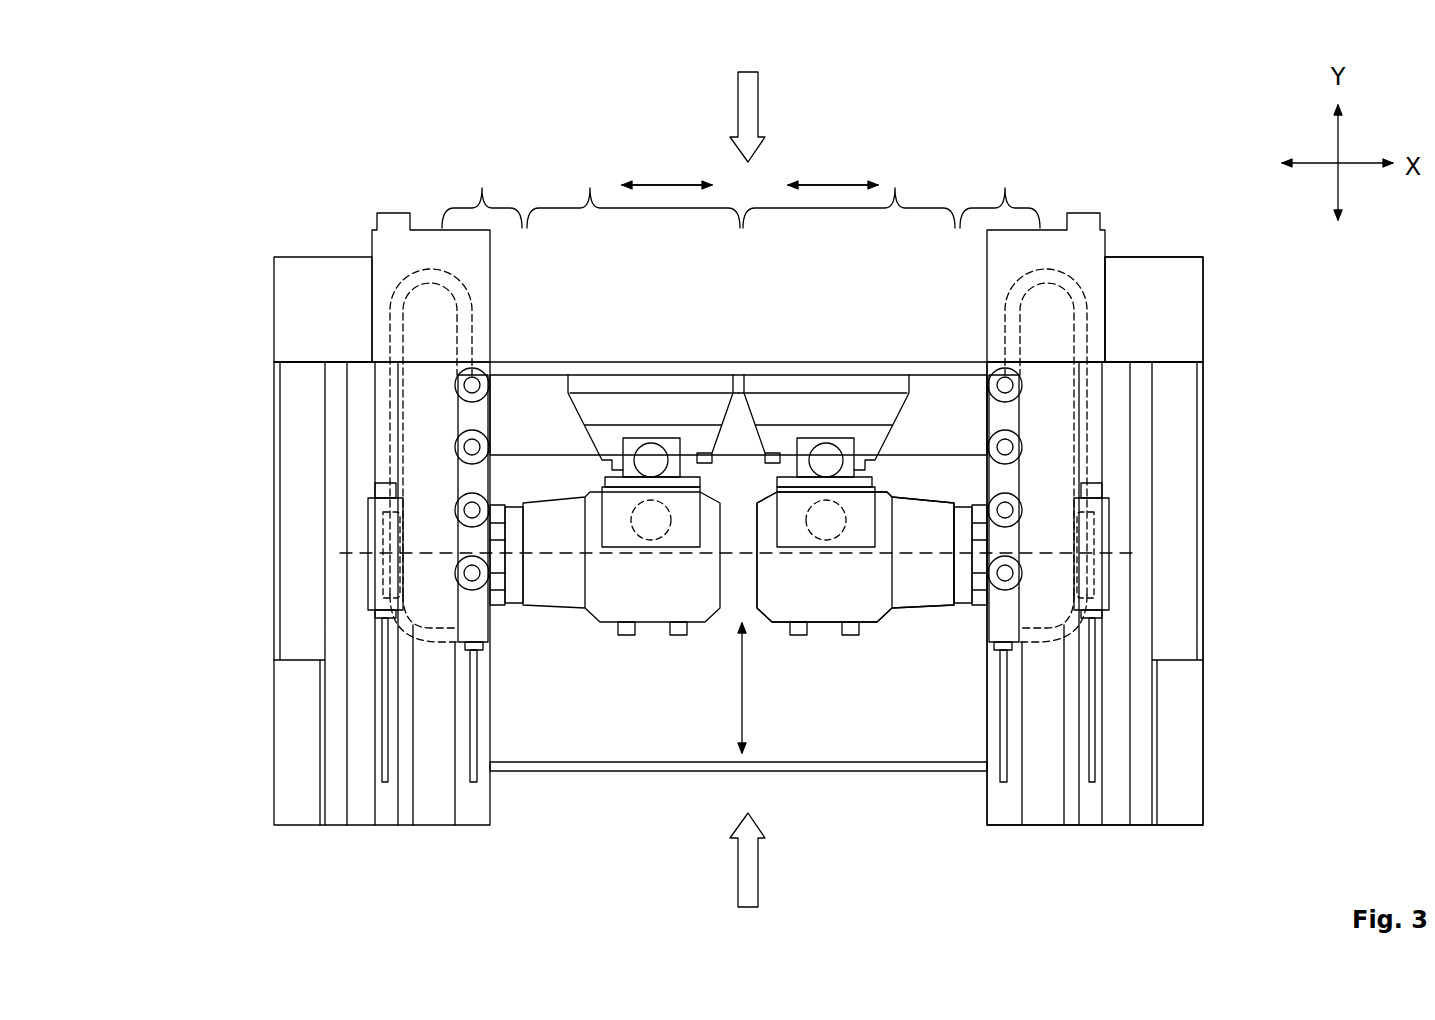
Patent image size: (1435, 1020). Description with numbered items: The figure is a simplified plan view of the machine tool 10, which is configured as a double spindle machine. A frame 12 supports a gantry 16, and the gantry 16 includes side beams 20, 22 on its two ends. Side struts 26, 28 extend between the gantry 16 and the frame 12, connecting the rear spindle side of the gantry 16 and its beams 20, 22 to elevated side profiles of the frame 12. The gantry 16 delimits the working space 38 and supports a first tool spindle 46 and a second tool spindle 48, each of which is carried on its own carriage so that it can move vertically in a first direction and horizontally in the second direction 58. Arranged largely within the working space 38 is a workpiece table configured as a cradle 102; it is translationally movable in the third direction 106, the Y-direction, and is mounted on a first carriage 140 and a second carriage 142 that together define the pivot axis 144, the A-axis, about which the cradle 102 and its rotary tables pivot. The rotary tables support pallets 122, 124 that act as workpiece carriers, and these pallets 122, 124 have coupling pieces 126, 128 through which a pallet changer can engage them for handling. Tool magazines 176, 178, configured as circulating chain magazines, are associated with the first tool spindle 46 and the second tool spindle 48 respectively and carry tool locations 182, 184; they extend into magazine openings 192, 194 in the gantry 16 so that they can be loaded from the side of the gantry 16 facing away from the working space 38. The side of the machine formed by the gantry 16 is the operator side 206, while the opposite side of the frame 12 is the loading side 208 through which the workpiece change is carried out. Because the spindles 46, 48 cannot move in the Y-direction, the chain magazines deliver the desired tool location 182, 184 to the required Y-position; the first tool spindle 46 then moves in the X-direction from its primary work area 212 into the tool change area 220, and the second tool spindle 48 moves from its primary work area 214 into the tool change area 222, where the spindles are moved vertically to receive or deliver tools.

The machine tool 10 is at (725, 503).
The frame 12 is at (1200, 765).
The gantry 16 is at (1140, 258).
The side beam 20 is at (292, 327).
The side beam 22 is at (1138, 310).
The side strut 26 is at (315, 380).
The side strut 28 is at (1172, 405).
The working space 38 is at (755, 489).
The first tool spindle 46 is at (665, 535).
The second tool spindle 48 is at (825, 535).
The second direction 58 is at (650, 185).
The cradle 102 is at (915, 620).
The third direction 106 is at (740, 690).
The pallet 122 is at (607, 588).
The pallet 124 is at (870, 605).
The coupling piece 126 is at (627, 640).
The coupling piece 128 is at (852, 638).
The first carriage 140 is at (372, 598).
The second carriage 142 is at (1105, 600).
The pivot axis 144 is at (1160, 555).
The tool magazine 176 is at (425, 520).
The tool magazine 178 is at (1060, 600).
The tool location 182 is at (460, 490).
The tool location 184 is at (1022, 505).
The magazine opening 192 is at (402, 247).
The magazine opening 194 is at (1068, 247).
The operator side 206 is at (760, 120).
The loading side 208 is at (737, 862).
The primary work area 212 is at (633, 189).
The primary work area 214 is at (849, 191).
The tool change area 220 is at (482, 191).
The tool change area 222 is at (1000, 189).